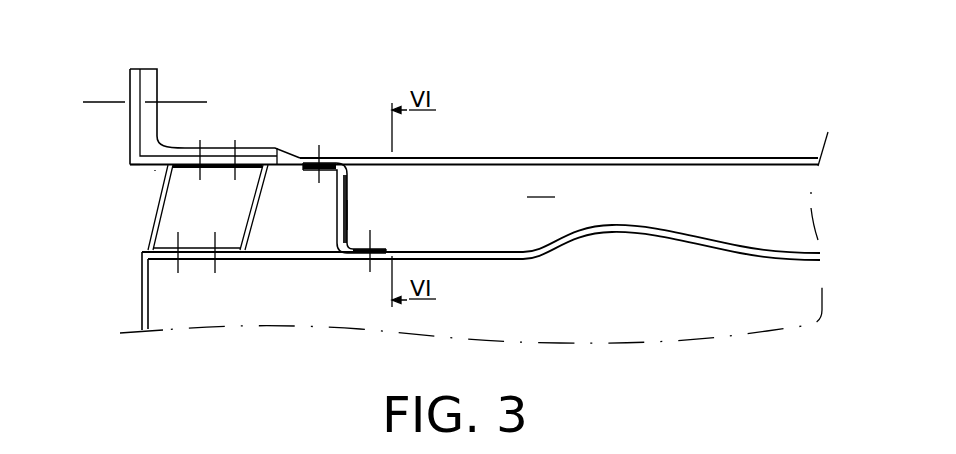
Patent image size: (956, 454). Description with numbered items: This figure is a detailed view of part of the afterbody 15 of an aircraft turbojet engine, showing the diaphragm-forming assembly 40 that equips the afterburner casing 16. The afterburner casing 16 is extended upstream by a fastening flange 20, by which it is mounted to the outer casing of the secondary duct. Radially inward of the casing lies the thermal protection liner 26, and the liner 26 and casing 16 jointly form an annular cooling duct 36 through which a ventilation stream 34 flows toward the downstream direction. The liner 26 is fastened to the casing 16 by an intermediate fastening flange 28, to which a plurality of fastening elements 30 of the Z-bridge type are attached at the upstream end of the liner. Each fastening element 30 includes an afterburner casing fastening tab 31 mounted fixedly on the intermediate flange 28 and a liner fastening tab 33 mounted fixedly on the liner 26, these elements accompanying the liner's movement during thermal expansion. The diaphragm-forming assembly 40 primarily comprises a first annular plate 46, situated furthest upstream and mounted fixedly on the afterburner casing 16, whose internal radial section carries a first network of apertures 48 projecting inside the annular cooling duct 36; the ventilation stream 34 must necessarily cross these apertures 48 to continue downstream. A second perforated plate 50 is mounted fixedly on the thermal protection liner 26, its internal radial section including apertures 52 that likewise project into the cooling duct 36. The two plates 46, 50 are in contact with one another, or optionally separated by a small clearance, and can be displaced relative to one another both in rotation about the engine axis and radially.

The afterbody 15 is at (536, 81).
The afterburner casing 16 is at (737, 155).
The fastening flange 20 is at (147, 86).
The thermal protection liner 26 is at (737, 239).
The intermediate fastening flange 28 is at (136, 163).
The fastening element 30 is at (172, 220).
The afterburner casing fastening tab 31 is at (180, 160).
The liner fastening tab 33 is at (163, 257).
The ventilation stream 34 is at (142, 198).
The annular cooling duct 36 is at (541, 187).
The diaphragm-forming assembly 40 is at (356, 166).
The first annular plate 46 is at (331, 229).
The apertures 48 is at (337, 197).
The second perforated plate 50 is at (361, 182).
The apertures 52 is at (350, 215).